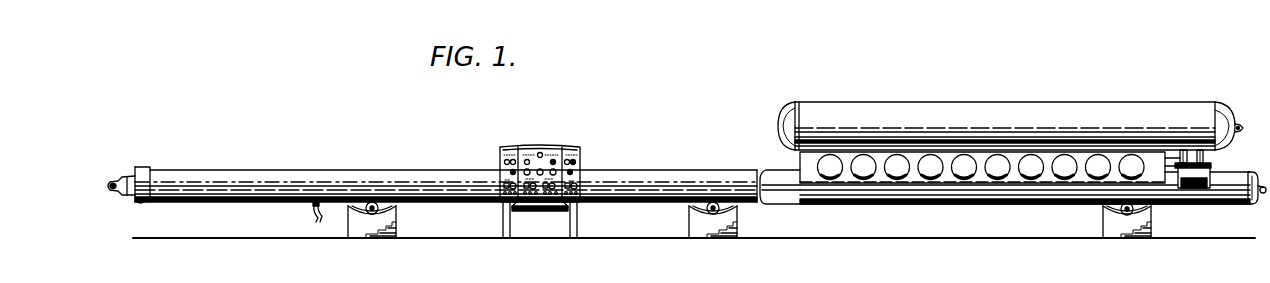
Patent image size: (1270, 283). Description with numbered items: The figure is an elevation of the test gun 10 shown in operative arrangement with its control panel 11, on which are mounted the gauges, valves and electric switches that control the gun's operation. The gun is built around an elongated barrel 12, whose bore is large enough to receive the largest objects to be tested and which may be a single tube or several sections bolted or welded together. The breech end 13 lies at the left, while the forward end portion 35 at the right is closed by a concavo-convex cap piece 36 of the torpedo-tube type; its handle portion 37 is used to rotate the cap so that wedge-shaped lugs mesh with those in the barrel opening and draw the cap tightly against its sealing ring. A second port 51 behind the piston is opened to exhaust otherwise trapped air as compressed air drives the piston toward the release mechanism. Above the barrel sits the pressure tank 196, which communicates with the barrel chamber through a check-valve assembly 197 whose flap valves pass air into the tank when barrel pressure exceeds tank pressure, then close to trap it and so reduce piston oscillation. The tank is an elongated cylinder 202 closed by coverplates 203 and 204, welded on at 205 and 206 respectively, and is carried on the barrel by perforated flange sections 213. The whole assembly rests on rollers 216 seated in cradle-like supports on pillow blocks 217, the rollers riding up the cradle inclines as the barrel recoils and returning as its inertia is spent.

The test gun 10 is at (467, 165).
The control panel 11 is at (505, 148).
The barrel 12 is at (223, 169).
The breech end 13 is at (133, 203).
The forward end portion 35 is at (1066, 204).
The cap piece 36 is at (1233, 205).
The handle portion 37 is at (1262, 194).
The second port 51 is at (312, 208).
The pressure tank 196 is at (1010, 106).
The check-valve assembly 197 is at (1212, 169).
The elongated cylinder 202 is at (1024, 106).
The coverplate 203 is at (1234, 106).
The coverplate 204 is at (779, 128).
The weld 205 is at (1218, 104).
The weld 206 is at (796, 104).
The perforated flange sections 213 is at (848, 177).
The rollers 216 is at (366, 211).
The pillow blocks 217 is at (396, 222).